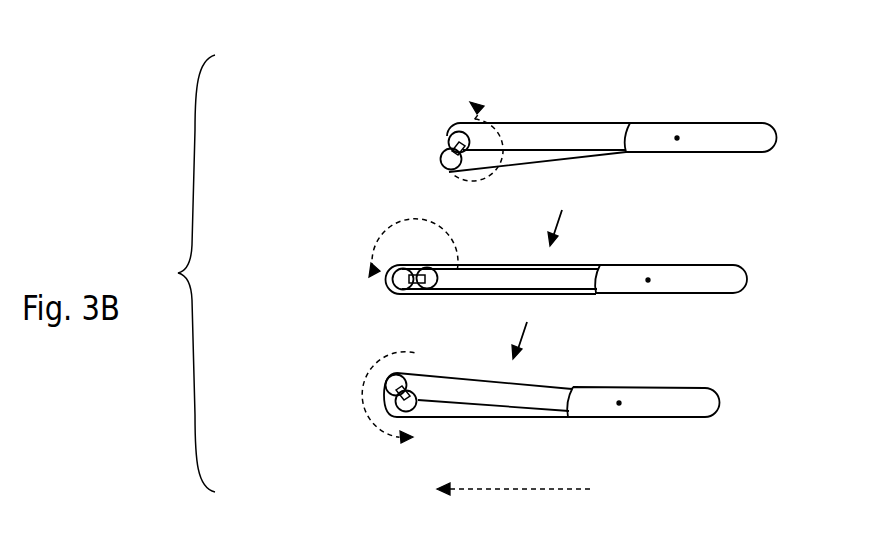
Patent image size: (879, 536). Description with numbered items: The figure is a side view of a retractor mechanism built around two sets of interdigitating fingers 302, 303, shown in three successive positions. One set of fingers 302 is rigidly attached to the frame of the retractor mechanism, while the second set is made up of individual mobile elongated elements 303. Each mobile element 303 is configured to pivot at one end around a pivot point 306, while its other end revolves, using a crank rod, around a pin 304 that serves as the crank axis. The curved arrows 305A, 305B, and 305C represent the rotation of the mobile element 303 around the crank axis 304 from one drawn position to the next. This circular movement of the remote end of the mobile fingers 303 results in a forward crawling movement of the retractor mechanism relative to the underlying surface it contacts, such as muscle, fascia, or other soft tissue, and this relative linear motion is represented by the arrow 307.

The set of fingers 302 is at (678, 122).
The mobile elongated elements 303 is at (513, 167).
The pin 304 is at (450, 133).
The curved arrow 305A is at (486, 110).
The curved arrow 305B is at (417, 229).
The curved arrow 305C is at (356, 402).
The pivot point 306 is at (679, 140).
The arrow 307 is at (513, 475).